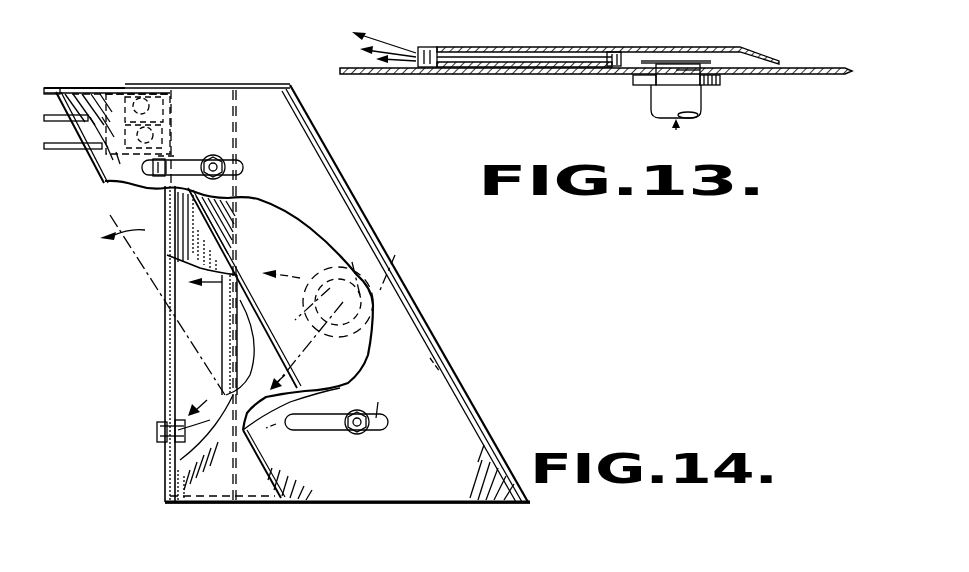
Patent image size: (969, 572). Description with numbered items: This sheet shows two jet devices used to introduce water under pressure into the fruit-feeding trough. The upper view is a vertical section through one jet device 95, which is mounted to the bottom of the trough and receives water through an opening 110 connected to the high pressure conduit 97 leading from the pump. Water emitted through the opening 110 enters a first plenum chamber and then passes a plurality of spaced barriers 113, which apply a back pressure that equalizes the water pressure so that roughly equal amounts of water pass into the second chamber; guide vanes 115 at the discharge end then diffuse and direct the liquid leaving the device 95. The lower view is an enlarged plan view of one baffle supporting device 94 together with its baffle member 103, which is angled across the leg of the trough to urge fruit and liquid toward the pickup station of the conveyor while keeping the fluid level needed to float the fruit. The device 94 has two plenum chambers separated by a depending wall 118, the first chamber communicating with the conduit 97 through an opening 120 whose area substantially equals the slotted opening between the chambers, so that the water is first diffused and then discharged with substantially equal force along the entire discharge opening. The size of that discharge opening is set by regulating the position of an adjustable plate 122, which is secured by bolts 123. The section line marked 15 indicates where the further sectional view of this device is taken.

In FIG. 14, the baffle supporting device 94 is at (218, 510).
In FIG. 13, the jet device 95 is at (497, 42).
In FIG. 13, the conduit 97 is at (702, 108).
In FIG. 14, the baffle member 103 is at (263, 100).
In FIG. 13, the opening 110 is at (690, 62).
In FIG. 13, the barrier 113 is at (612, 53).
In FIG. 13, the guide vane 115 is at (418, 54).
In FIG. 14, the depending wall 118 is at (238, 318).
In FIG. 14, the opening 120 is at (390, 256).
In FIG. 14, the adjustable plate 122 is at (167, 356).
In FIG. 14, the bolt 123 is at (160, 174).
In FIG. 14, the section line 15- 15 is at (277, 395).